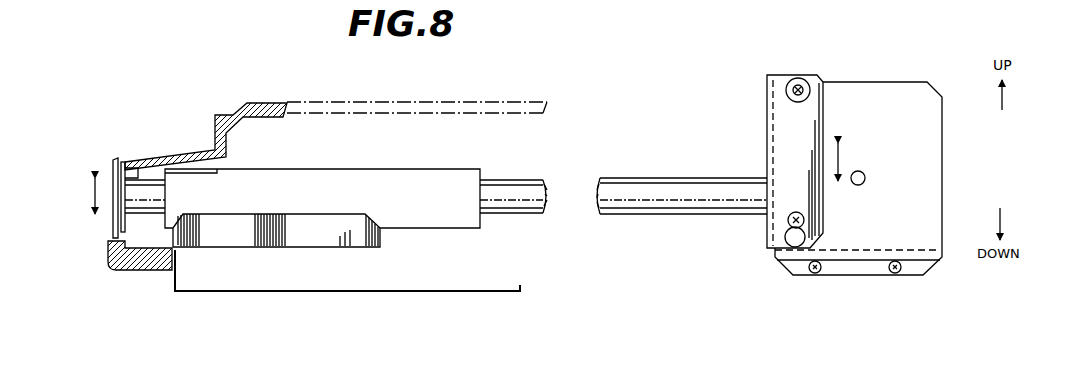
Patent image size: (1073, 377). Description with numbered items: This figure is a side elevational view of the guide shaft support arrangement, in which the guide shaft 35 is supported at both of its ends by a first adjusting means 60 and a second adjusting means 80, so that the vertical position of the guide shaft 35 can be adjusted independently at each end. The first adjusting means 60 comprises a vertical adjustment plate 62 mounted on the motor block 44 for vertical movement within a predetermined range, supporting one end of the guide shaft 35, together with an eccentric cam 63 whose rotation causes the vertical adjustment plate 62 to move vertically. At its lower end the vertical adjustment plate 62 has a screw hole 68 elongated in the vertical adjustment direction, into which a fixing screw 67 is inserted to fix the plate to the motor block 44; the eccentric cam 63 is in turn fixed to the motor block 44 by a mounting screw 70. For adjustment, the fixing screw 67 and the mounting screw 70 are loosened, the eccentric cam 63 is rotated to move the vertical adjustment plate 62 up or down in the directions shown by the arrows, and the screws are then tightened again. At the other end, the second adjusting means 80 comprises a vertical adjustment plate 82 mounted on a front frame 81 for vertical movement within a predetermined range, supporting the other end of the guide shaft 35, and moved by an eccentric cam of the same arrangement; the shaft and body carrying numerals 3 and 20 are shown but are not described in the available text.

The rotating shaft 3 is at (407, 102).
The holder body 20 is at (442, 218).
The guide shaft 35 is at (522, 190).
The motor block 44 is at (923, 180).
The first adjusting means 60 is at (753, 152).
The vertical adjustment plate 62 is at (782, 241).
The eccentric cam 63 is at (791, 80).
The fixing screw 67 is at (787, 220).
The screw hole 68 is at (805, 243).
The mounting screw 70 is at (806, 82).
The second adjusting means 80 is at (112, 229).
The front frame 81 is at (144, 162).
The vertical adjustment plate 82 is at (113, 165).